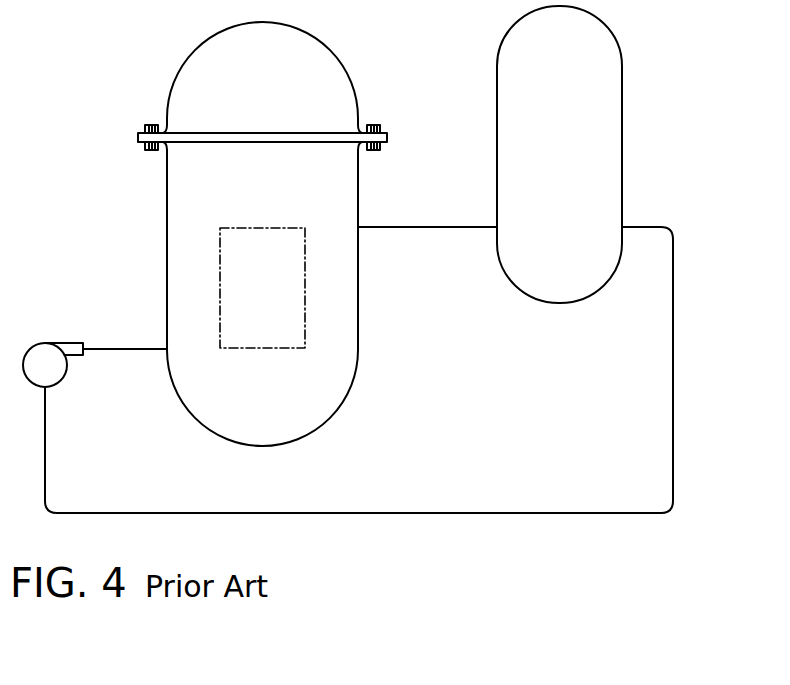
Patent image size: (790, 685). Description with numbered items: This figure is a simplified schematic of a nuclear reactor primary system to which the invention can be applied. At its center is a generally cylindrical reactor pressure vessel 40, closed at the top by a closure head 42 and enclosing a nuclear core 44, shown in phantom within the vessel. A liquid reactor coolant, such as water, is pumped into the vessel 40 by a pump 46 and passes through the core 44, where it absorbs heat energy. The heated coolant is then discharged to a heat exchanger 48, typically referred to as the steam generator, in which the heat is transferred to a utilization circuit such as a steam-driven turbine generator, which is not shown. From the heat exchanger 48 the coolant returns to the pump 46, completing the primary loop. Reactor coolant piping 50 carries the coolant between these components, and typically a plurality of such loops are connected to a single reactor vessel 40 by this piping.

The reactor pressure vessel 40 is at (266, 234).
The closure head 42 is at (176, 87).
The nuclear core 44 is at (220, 278).
The pump 46 is at (42, 343).
The heat exchanger 48 is at (622, 98).
The reactor coolant piping 50 is at (673, 450).